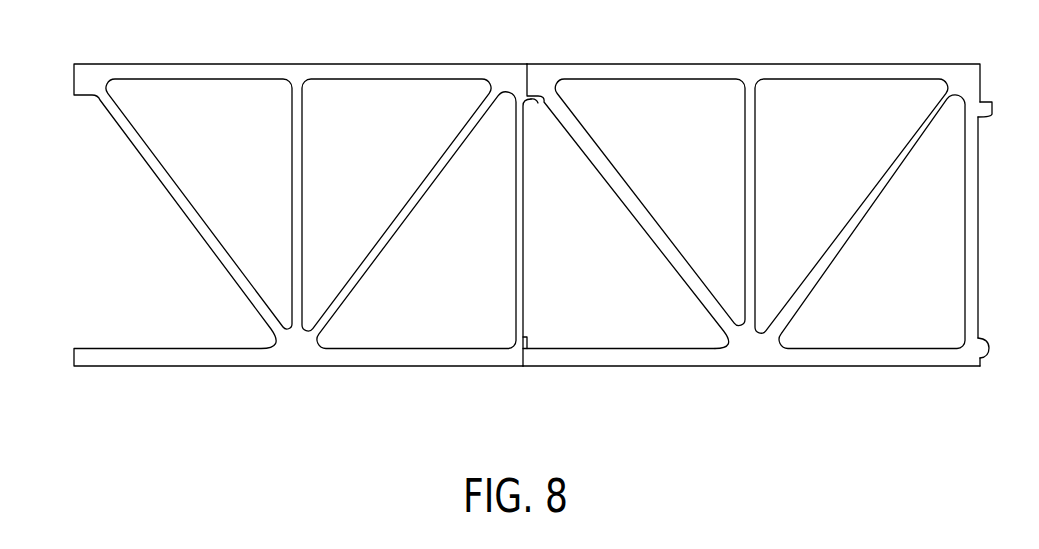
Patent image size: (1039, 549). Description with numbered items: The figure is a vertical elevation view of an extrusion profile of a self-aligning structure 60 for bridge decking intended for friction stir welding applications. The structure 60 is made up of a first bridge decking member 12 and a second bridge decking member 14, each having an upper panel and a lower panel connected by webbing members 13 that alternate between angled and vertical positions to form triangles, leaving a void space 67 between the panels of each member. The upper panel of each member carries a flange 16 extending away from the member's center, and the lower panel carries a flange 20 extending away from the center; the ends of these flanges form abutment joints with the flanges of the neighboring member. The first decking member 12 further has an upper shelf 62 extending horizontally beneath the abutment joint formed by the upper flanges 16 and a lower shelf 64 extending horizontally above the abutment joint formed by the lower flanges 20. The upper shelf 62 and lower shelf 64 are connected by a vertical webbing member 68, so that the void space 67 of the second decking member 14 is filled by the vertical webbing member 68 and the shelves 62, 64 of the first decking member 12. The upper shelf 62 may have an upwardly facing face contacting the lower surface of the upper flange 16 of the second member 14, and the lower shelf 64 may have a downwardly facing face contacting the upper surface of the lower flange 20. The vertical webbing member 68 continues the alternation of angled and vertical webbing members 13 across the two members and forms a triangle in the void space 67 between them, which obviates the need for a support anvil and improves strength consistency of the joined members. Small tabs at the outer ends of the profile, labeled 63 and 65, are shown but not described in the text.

The first bridge decking member 12 is at (233, 77).
The webbing members 13 is at (847, 235).
The second bridge decking member 14 is at (880, 68).
The flange 16 is at (556, 72).
The flange 20 is at (573, 358).
The self-aligning structure 60 is at (527, 239).
The upper shelf 62 is at (535, 104).
The upper end tab 63 is at (984, 98).
The lower shelf 64 is at (527, 343).
The lower end tab 65 is at (981, 357).
The void space 67 is at (127, 305).
The vertical webbing member 68 is at (523, 274).